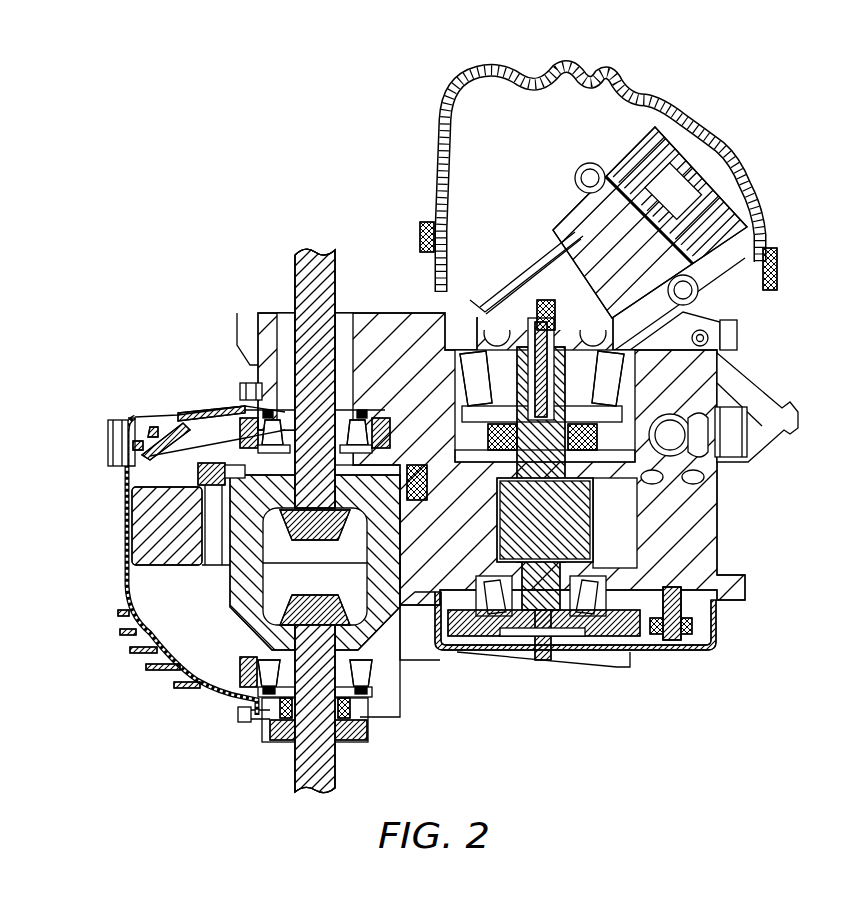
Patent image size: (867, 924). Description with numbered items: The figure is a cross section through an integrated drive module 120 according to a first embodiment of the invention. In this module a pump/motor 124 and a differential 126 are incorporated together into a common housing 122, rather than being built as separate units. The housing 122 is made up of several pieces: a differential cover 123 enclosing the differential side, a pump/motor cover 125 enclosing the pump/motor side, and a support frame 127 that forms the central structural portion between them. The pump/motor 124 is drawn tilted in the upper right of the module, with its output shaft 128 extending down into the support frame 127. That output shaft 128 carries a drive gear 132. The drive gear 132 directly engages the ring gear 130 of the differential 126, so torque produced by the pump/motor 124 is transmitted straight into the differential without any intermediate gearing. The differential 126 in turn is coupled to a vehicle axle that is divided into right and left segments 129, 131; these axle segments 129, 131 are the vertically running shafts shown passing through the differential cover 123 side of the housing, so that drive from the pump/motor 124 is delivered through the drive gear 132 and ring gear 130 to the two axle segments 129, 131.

The engine 120 is at (246, 98).
The common housing 122 is at (420, 300).
The differential cover 123 is at (126, 572).
The pump/motor 124 is at (561, 126).
The pump/motor cover 125 is at (478, 72).
The differential 126 is at (174, 591).
The support frame 127 is at (370, 333).
The output shaft 128 is at (545, 488).
The right segment of vehicle axle 129 is at (300, 283).
The ring gear 130 is at (433, 603).
The left segment of vehicle axle 131 is at (308, 764).
The drive gear 132 is at (556, 537).